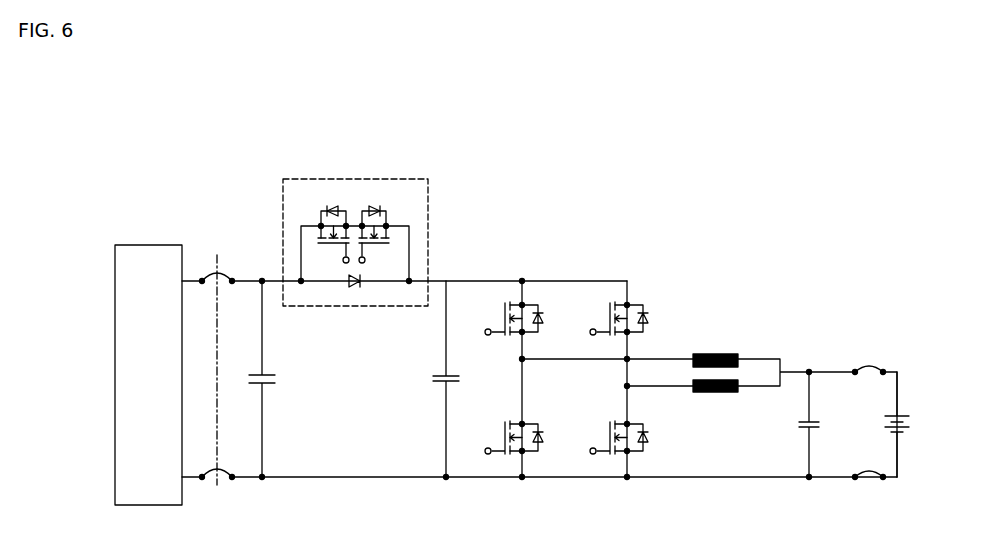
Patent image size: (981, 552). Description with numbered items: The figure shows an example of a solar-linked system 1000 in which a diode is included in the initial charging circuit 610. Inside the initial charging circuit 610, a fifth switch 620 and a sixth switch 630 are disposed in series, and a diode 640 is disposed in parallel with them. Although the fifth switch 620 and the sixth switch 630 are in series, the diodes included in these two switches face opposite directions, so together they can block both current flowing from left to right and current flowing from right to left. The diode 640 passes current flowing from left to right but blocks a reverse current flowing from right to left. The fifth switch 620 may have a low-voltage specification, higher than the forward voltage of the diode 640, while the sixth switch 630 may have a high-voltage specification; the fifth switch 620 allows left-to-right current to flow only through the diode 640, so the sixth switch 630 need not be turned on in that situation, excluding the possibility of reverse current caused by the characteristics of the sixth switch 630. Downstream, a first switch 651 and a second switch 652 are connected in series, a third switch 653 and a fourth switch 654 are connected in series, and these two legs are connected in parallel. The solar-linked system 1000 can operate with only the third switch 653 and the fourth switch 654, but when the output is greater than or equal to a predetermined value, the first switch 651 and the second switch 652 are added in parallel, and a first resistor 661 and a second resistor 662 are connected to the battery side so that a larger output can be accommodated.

The solar-linked system 1000 is at (777, 131).
The initial charging circuit 610 is at (385, 179).
The fifth switch 620 is at (321, 211).
The sixth switch 630 is at (388, 211).
The diode 640 is at (353, 288).
The first switch 651 is at (530, 305).
The second switch 652 is at (515, 453).
The third switch 653 is at (632, 305).
The fourth switch 654 is at (604, 453).
The first resistor 661 is at (720, 354).
The second resistor 662 is at (722, 392).